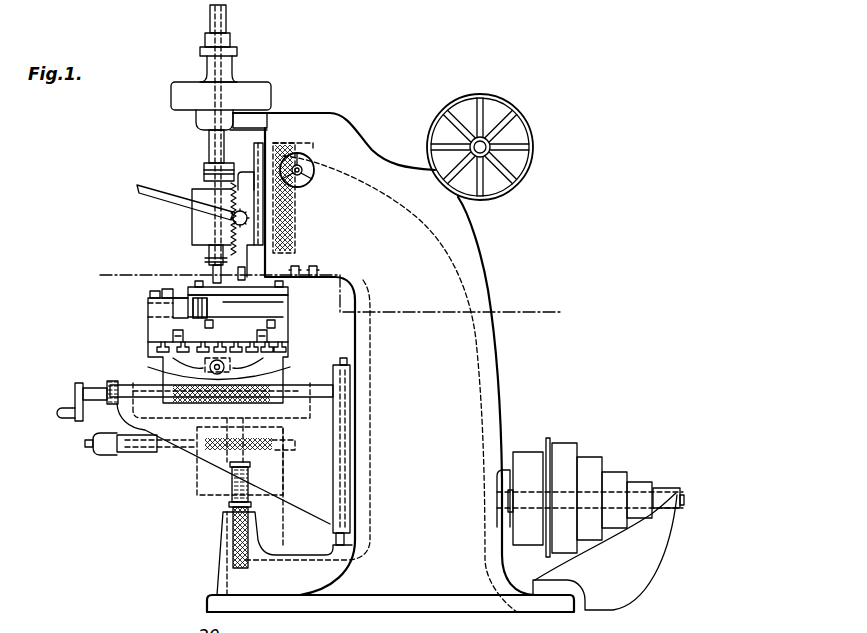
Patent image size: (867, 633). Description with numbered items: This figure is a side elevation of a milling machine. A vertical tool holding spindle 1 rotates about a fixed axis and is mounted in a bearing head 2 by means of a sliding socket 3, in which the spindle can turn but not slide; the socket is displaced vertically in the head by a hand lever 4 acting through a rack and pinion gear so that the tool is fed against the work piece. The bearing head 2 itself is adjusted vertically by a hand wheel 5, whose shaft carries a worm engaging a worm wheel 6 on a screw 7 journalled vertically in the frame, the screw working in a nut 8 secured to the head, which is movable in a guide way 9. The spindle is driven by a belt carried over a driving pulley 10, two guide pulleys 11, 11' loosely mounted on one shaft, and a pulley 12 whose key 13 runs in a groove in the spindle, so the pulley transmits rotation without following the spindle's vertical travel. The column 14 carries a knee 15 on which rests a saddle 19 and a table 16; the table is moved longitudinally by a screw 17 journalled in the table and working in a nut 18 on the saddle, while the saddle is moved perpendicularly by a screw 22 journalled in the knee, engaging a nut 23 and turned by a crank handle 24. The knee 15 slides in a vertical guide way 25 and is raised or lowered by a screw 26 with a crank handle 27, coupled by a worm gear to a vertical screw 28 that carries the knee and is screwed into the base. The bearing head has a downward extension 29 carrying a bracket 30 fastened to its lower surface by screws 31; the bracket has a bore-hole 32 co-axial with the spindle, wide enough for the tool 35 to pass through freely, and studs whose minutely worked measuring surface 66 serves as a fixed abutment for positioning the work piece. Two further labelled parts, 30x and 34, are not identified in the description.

The tool holding spindle 1 is at (208, 151).
The bearing head 2 is at (192, 226).
The sliding socket 3 is at (203, 182).
The hand lever 4 is at (156, 198).
The hand wheel 5 is at (306, 158).
The worm wheel 6 is at (293, 140).
The screw 7 is at (296, 214).
The nut 8 is at (298, 198).
The guide way 9 is at (253, 160).
The driving pulley 10 is at (527, 455).
The guide pulley 11 is at (496, 147).
The guide pulley 11' is at (480, 135).
The pulley 12 is at (253, 92).
The key 13 is at (210, 18).
The column 14 is at (470, 370).
The knee 15 is at (228, 405).
The table 16 is at (148, 347).
The screw 17 is at (204, 368).
The nut 18 is at (279, 364).
The saddle 19 is at (275, 362).
The screw 22 is at (183, 408).
The nut 23 is at (192, 420).
The crank handle 24 is at (77, 393).
The vertical guide way 25 is at (347, 358).
The screw 26 is at (218, 462).
The crank handle 27 is at (90, 449).
The vertical screw 28 is at (232, 503).
The downward extension 29 is at (209, 260).
The bracket 30 is at (228, 305).
The clamping pieces 30x is at (313, 264).
The screws 31 is at (288, 292).
The bore-hole 32 is at (231, 318).
The drive belt line 34 is at (187, 278).
The tool 35 is at (213, 279).
The measuring surface 66 is at (195, 273).